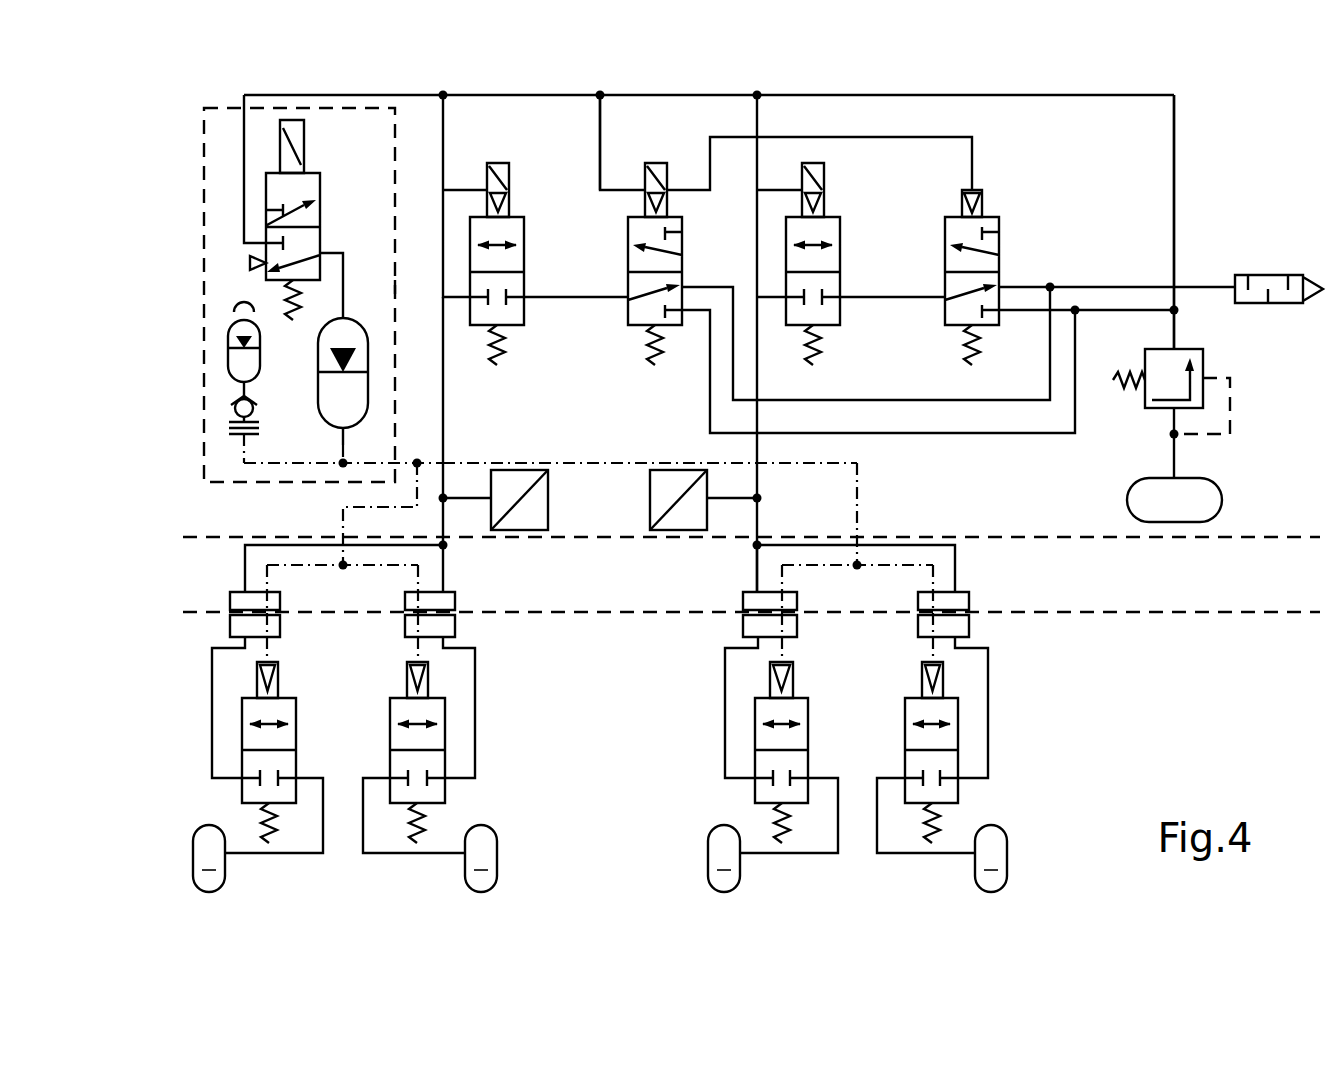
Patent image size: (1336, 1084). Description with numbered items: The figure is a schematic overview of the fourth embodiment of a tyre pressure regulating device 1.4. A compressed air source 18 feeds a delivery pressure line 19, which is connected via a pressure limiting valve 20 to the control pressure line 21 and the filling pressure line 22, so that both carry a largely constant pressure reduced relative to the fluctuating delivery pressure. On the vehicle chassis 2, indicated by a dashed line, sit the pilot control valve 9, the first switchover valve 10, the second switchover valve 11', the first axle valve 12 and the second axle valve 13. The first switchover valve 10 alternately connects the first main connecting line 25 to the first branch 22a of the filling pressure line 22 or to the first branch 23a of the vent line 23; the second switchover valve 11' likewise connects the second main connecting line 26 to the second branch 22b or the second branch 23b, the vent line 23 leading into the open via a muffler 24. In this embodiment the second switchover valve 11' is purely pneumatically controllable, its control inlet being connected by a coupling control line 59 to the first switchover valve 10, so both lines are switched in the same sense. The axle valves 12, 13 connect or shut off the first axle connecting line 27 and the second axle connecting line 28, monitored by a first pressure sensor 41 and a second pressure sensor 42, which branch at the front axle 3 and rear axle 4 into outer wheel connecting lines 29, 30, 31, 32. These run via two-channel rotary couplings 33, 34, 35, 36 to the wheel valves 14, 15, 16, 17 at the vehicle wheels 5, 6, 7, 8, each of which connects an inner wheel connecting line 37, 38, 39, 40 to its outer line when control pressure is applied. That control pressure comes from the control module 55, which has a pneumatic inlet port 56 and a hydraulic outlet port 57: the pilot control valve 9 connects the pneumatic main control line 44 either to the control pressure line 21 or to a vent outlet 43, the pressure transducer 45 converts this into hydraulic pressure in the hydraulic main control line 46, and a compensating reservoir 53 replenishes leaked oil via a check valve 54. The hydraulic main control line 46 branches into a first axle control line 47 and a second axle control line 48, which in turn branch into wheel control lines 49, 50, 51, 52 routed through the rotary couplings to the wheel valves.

The pneumatic inlet port 56 is at (236, 99).
The pilot control valve 9 is at (266, 228).
The vent outlet 43 is at (250, 263).
The pneumatic main control line 44 is at (345, 270).
The control module 55 is at (397, 290).
The compensating reservoir 53 is at (245, 366).
The pressure transducer 45 is at (340, 405).
The check valve 54 is at (236, 412).
The hydraulic main control line 46 is at (343, 440).
The hydraulic outlet port 57 is at (406, 455).
The first axle control line 47 is at (342, 518).
The first axle valve 12 is at (527, 198).
The coupling control line 59 is at (710, 150).
The first switchover valve 10 is at (695, 265).
The first main connecting line 25 is at (572, 294).
The second axle valve 13 is at (852, 238).
The second main connecting line 26 is at (887, 294).
The second switchover valve 11' is at (996, 242).
The second branch of the vent line 23b is at (1025, 287).
The second branch of the filling pressure line 22b is at (1025, 310).
The vent line 23 is at (1105, 287).
The filling pressure line 22 is at (1110, 312).
The control pressure line 21 is at (1175, 148).
The muffler 24 is at (1268, 290).
The pressure limiting valve 20 is at (1215, 363).
The delivery pressure line 19 is at (1175, 458).
The compressed air source 18 is at (1190, 500).
The vehicle chassis 2 is at (1000, 533).
The first axle connecting line 27 is at (443, 400).
The first branch of the filling pressure line 22a is at (710, 400).
The second axle connecting line 28 is at (757, 448).
The first branch of the vent line 23a is at (880, 400).
The second axle control line 48 is at (860, 512).
The first outer wheel connecting line 29 is at (245, 572).
The second outer wheel connecting line 30 is at (445, 570).
The first pressure sensor 41 is at (548, 500).
The second pressure sensor 42 is at (650, 500).
The third outer wheel connecting line 31 is at (757, 570).
The fourth outer wheel connecting line 32 is at (960, 574).
The front axle 3 is at (335, 603).
The rear axle 4 is at (849, 603).
The rotary coupling 33 is at (240, 625).
The rotary coupling 34 is at (455, 625).
The rotary coupling 35 is at (745, 625).
The rotary coupling 36 is at (970, 625).
The first wheel control line 49 is at (305, 568).
The second wheel control line 50 is at (373, 568).
The third wheel control line 51 is at (820, 568).
The fourth wheel control line 52 is at (885, 568).
The first wheel valve 14 is at (242, 720).
The second wheel valve 15 is at (445, 720).
The third wheel valve 16 is at (755, 720).
The fourth wheel valve 17 is at (958, 720).
The first inner wheel connecting line 37 is at (310, 775).
The second inner wheel connecting line 38 is at (378, 775).
The third inner wheel connecting line 39 is at (825, 775).
The fourth inner wheel connecting line 40 is at (890, 775).
The vehicle wheel 5 is at (209, 858).
The vehicle wheel 6 is at (481, 858).
The vehicle wheel 7 is at (724, 858).
The vehicle wheel 8 is at (991, 858).
The tyre pressure regulating device 1.4 is at (1173, 677).